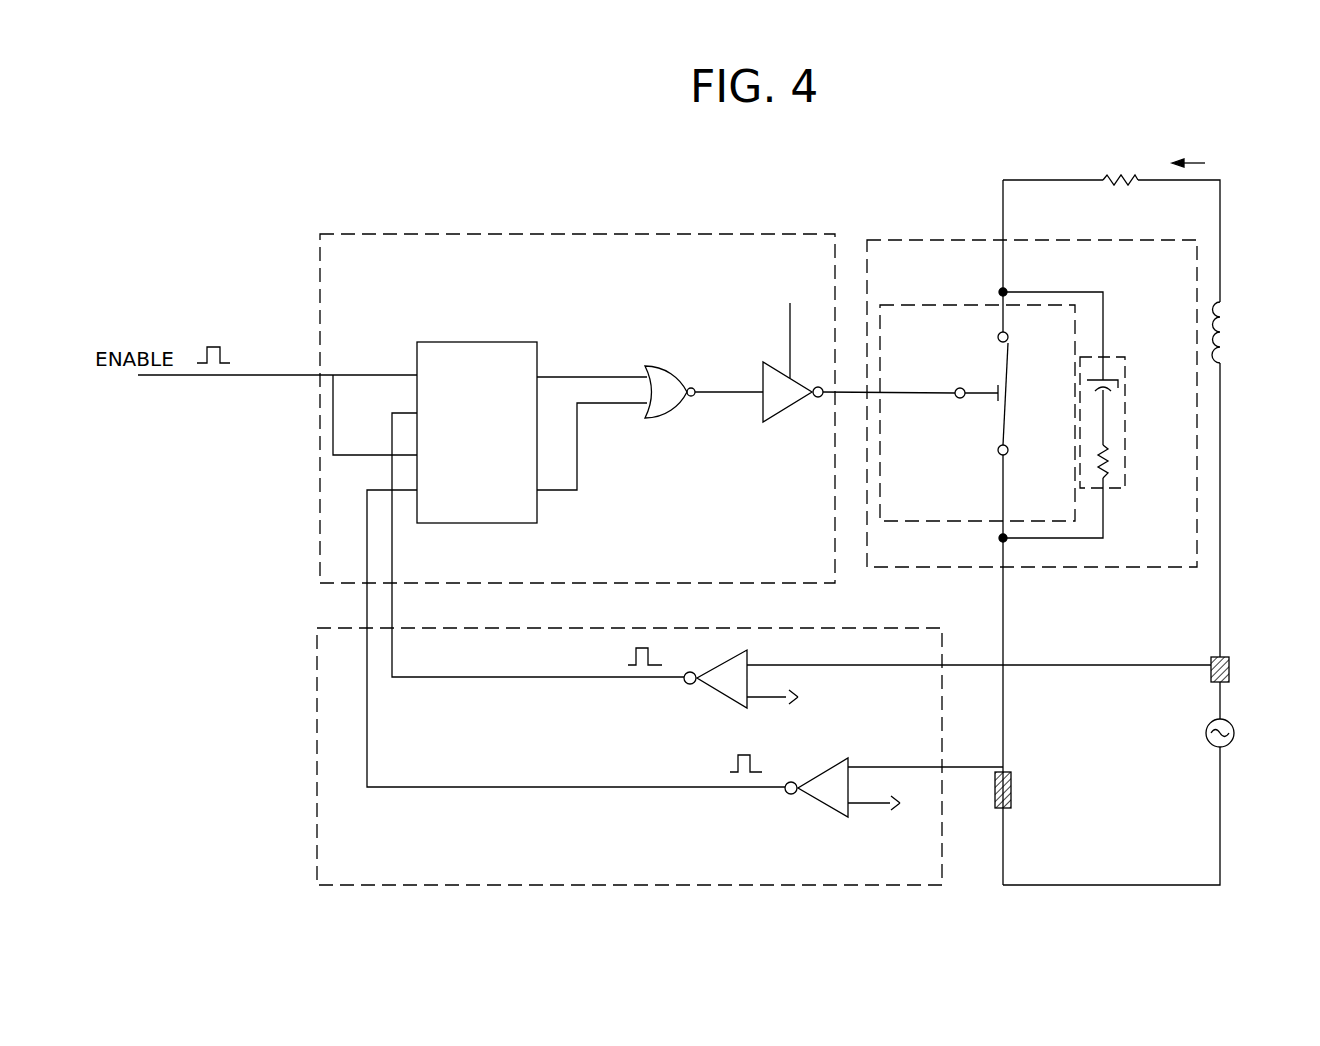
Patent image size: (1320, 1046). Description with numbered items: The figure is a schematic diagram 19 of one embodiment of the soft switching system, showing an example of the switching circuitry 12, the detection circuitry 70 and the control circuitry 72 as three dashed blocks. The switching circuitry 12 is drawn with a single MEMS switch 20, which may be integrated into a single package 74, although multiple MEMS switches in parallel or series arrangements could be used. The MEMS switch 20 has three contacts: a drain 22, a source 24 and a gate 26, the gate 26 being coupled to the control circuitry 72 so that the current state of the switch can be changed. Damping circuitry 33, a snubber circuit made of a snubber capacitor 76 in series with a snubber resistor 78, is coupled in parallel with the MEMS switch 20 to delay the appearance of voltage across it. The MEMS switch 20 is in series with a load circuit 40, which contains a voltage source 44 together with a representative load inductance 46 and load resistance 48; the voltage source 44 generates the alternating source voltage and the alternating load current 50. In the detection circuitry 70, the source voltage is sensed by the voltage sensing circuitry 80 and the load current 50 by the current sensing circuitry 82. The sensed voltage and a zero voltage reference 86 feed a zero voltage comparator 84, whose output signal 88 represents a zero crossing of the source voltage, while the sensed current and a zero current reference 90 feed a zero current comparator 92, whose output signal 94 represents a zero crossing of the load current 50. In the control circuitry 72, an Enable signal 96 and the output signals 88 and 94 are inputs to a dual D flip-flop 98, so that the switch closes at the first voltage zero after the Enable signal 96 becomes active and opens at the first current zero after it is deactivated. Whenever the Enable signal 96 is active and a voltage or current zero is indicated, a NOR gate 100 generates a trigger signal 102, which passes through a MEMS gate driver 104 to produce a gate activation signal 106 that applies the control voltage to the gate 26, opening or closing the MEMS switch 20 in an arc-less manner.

The switching circuitry 12 is at (888, 240).
The schematic diagram 19 is at (395, 177).
The MEMS switch 20 is at (995, 405).
The drain 22 is at (1010, 339).
The source 24 is at (996, 453).
The gate 26 is at (958, 400).
The damping circuitry 33 is at (1113, 356).
The load circuit 40 is at (1160, 506).
The voltage source 44 is at (1205, 745).
The load inductance 46 is at (1222, 320).
The load resistance 48 is at (1120, 178).
The load current 50 is at (1200, 163).
The detection circuitry 70 is at (317, 850).
The control circuitry 72 is at (532, 233).
The package 74 is at (890, 305).
The snubber capacitor 76 is at (1120, 392).
The snubber resistor 78 is at (1120, 465).
The voltage sensing circuitry 80 is at (1222, 657).
The current sensing circuitry 82 is at (1012, 800).
The zero voltage comparator 84 is at (722, 708).
The zero voltage reference 86 is at (765, 700).
The output signal 88 is at (628, 662).
The zero current reference 90 is at (875, 806).
The zero current comparator 92 is at (820, 812).
The output signal 94 is at (730, 768).
The Enable signal 96 is at (213, 347).
The dual D flip-flop 98 is at (479, 342).
The NOR gate 100 is at (655, 365).
The trigger signal 102 is at (727, 398).
The MEMS gate driver 104 is at (790, 410).
The gate activation signal 106 is at (836, 386).